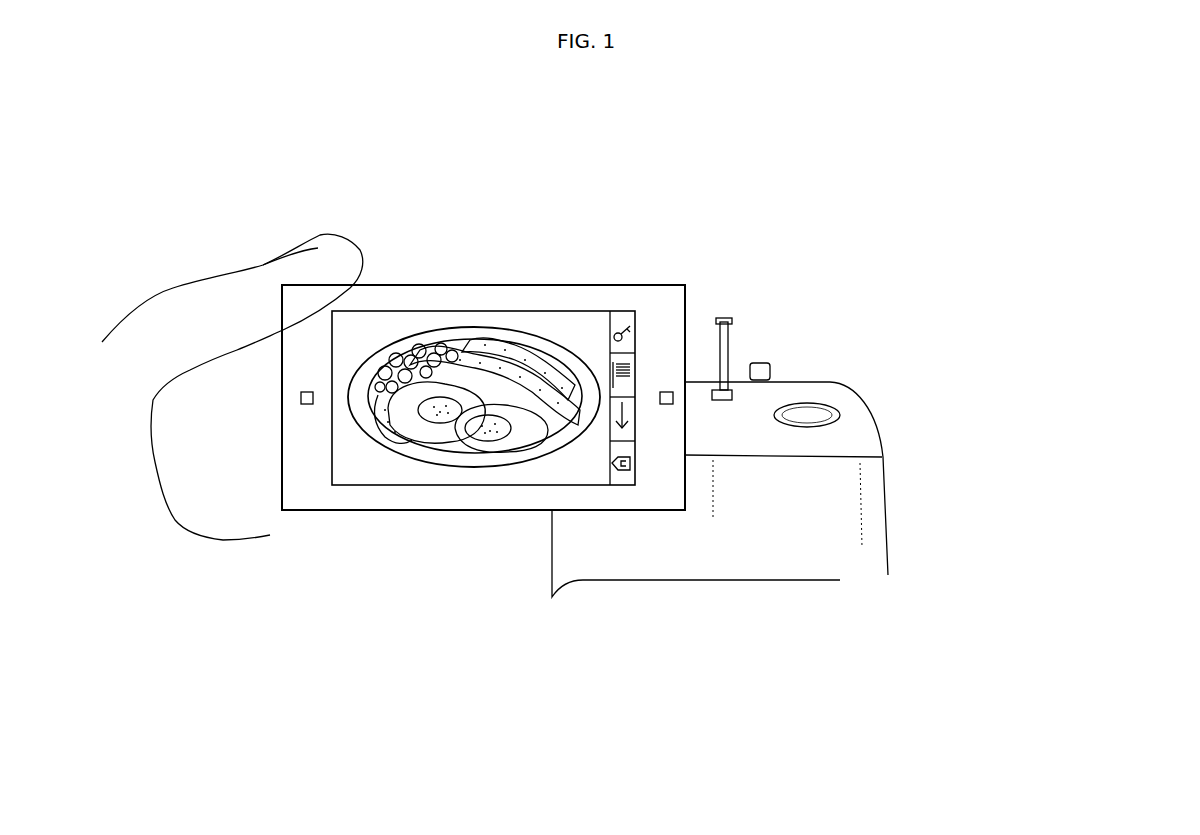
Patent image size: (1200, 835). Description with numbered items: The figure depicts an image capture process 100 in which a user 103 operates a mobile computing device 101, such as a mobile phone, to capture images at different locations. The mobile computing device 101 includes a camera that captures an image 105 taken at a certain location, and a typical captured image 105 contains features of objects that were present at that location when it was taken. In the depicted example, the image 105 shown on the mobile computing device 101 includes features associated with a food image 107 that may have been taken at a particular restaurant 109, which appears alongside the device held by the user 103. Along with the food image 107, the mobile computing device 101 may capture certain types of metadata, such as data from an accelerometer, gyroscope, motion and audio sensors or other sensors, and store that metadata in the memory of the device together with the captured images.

The image capture process 100 is at (1182, 66).
The mobile computing device 101 is at (560, 285).
The user 103 is at (151, 437).
The image 105 is at (403, 485).
The food image 107 is at (465, 325).
The restaurant 109 is at (807, 588).